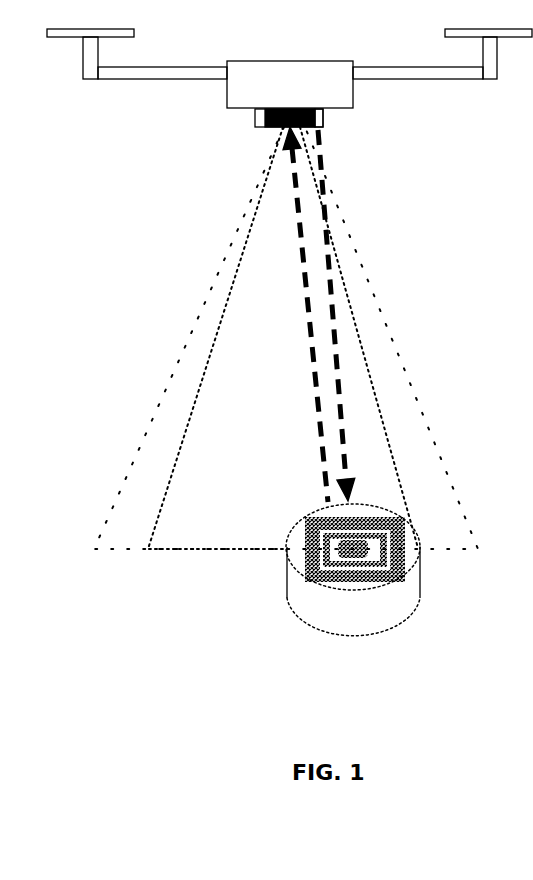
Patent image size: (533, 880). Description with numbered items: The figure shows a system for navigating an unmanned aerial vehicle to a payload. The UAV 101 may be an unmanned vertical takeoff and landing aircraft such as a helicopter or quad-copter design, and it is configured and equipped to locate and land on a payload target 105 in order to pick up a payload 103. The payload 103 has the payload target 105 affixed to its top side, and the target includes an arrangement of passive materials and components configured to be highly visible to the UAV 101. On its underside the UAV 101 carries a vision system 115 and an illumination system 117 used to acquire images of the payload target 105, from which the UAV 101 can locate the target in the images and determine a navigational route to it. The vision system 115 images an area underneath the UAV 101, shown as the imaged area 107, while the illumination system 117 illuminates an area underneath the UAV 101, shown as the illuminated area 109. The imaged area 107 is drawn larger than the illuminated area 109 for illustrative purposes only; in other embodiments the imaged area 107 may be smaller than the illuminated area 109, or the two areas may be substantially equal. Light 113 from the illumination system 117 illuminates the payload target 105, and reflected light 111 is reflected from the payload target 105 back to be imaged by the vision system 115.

The UAV 101 is at (297, 61).
The payload 103 is at (421, 600).
The payload target 105 is at (283, 540).
The imaged area 107 is at (153, 402).
The illuminated area 109 is at (208, 343).
The reflected light 111 is at (286, 248).
The light 113 is at (342, 304).
The vision system 115 is at (256, 116).
The illumination system 117 is at (331, 132).